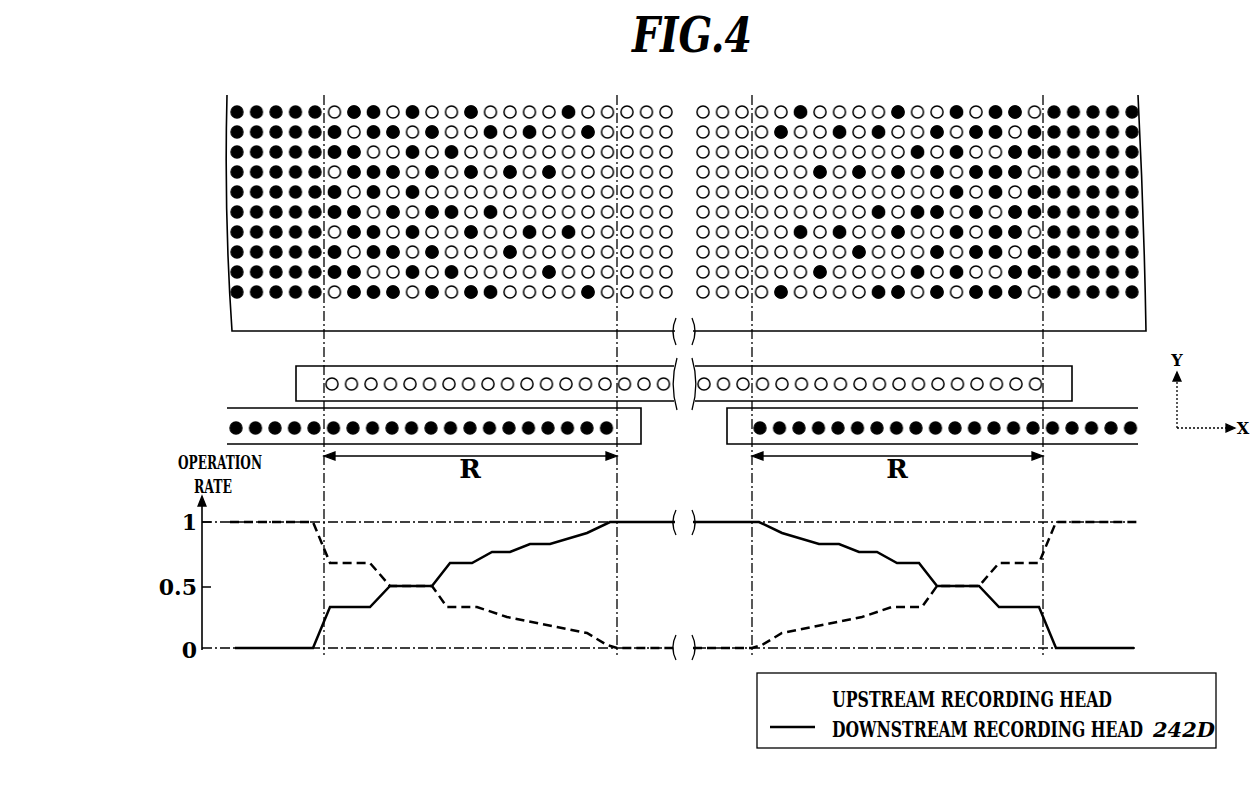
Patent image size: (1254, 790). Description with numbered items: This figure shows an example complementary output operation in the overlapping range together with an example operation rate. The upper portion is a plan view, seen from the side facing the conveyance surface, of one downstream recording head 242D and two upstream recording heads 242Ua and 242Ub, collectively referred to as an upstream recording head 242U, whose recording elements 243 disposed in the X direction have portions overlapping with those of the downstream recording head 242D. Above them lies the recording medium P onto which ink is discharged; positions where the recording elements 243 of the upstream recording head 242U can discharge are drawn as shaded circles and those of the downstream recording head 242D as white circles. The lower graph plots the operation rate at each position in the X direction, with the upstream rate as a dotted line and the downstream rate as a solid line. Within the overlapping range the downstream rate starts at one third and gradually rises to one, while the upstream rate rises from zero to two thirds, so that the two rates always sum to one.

The recording medium P is at (1131, 322).
The downstream recording head 242D is at (666, 398).
The upstream recording head 242U is at (768, 697).
The upstream recording head 242Ua is at (620, 444).
The upstream recording head 242Ub is at (1078, 442).
The recording elements 243 is at (607, 410).